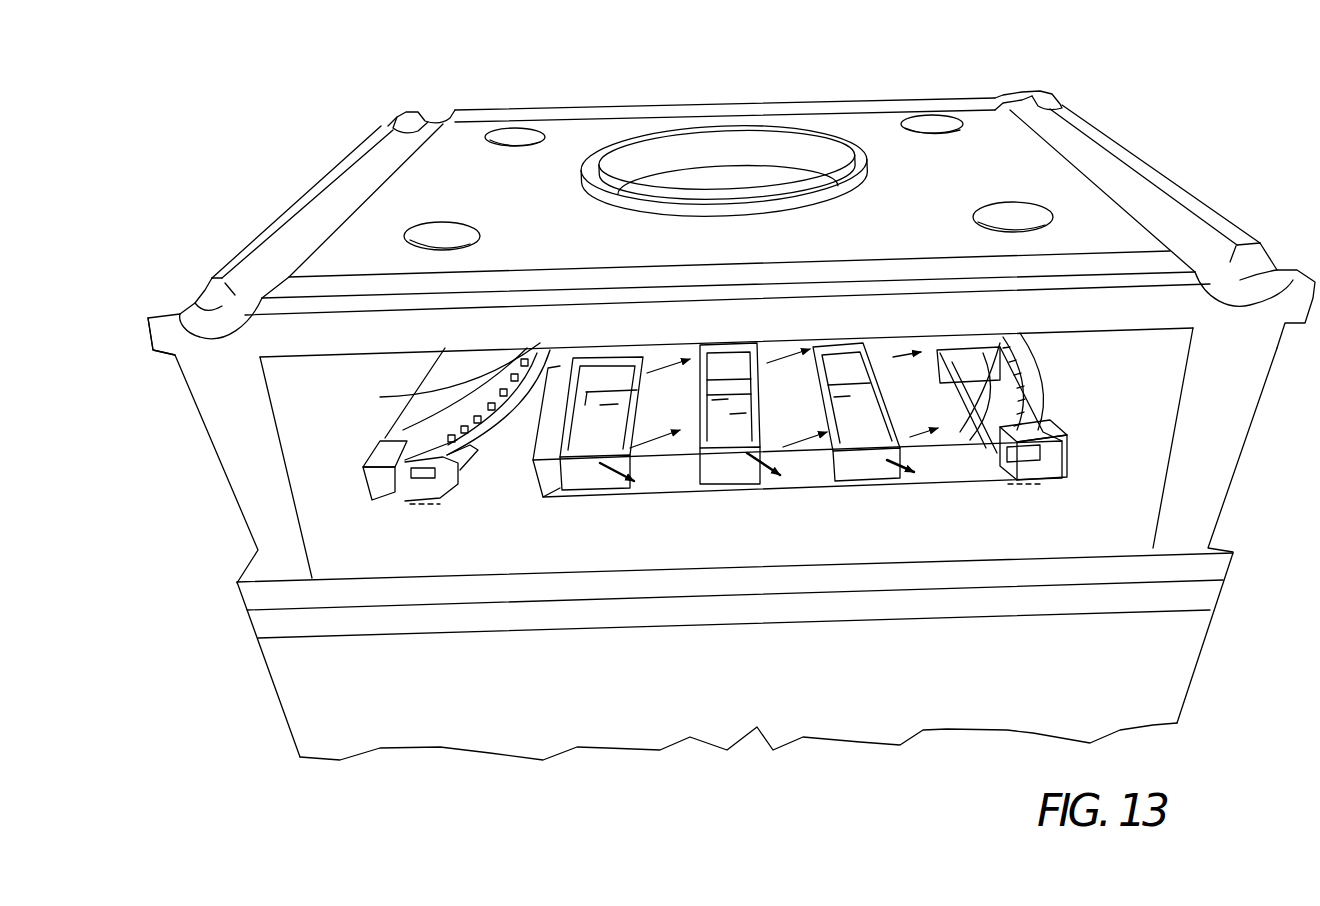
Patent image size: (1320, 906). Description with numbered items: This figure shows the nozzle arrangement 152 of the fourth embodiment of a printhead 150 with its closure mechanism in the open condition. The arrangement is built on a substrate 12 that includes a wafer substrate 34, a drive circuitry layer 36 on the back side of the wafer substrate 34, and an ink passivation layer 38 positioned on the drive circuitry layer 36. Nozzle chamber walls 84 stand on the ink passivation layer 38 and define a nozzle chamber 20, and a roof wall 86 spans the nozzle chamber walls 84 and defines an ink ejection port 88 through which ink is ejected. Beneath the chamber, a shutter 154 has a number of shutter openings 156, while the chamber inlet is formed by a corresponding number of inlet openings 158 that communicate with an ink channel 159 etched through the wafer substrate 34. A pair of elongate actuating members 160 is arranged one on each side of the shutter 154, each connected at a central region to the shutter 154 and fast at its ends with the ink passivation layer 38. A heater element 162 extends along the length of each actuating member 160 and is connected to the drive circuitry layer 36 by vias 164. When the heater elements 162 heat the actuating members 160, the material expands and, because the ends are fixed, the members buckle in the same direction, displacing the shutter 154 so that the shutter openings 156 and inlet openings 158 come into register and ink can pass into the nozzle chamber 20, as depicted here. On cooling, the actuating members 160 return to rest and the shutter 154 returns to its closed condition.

The substrate 12 is at (1208, 640).
The nozzle chamber 20 is at (1163, 401).
The wafer substrate 34 is at (1197, 682).
The drive circuitry layer 36 is at (258, 628).
The ink passivation layer 38 is at (250, 598).
The nozzle chamber walls 84 is at (223, 473).
The roof wall 86 is at (988, 133).
The ink ejection port 88 is at (726, 148).
The printhead 150 is at (1150, 115).
The nozzle arrangement 152 is at (639, 99).
The shutter 154 is at (915, 487).
The shutter openings 156 is at (581, 437).
The inlet openings 158 is at (608, 405).
The ink channel 159 is at (739, 412).
The actuating members 160 is at (388, 496).
The heater elements 162 is at (492, 417).
The vias 164 is at (424, 490).